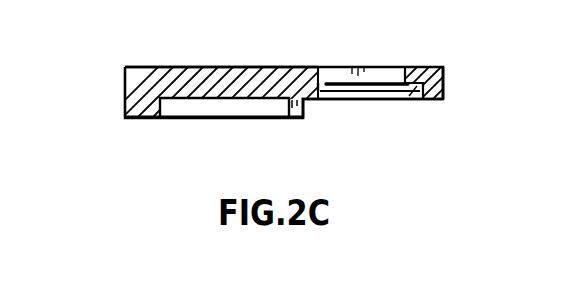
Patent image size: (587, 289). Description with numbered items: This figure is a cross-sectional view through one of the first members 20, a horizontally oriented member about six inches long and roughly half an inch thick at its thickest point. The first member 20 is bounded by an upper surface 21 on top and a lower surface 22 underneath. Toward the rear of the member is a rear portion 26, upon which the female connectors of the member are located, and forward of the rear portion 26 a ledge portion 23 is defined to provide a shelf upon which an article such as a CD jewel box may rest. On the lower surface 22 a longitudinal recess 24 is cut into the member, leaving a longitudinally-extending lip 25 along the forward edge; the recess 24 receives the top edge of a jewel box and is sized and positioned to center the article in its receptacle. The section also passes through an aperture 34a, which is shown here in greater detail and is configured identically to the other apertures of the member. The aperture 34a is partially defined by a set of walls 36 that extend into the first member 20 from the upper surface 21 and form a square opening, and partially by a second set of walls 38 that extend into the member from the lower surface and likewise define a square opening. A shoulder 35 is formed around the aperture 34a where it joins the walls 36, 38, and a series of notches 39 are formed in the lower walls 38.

The first member 20 is at (120, 63).
The upper surface 21 is at (173, 67).
The ledge portion 23 is at (212, 80).
The longitudinal recess 24 is at (207, 100).
The longitudinally-extending lip 25 is at (143, 121).
The lower surface 22 is at (310, 101).
The second set of walls 38 is at (319, 96).
The notches 39 is at (323, 82).
The set of walls 36 is at (311, 81).
The shoulder 35 is at (415, 85).
The rear portion 26 is at (444, 80).
The aperture 34a is at (425, 101).